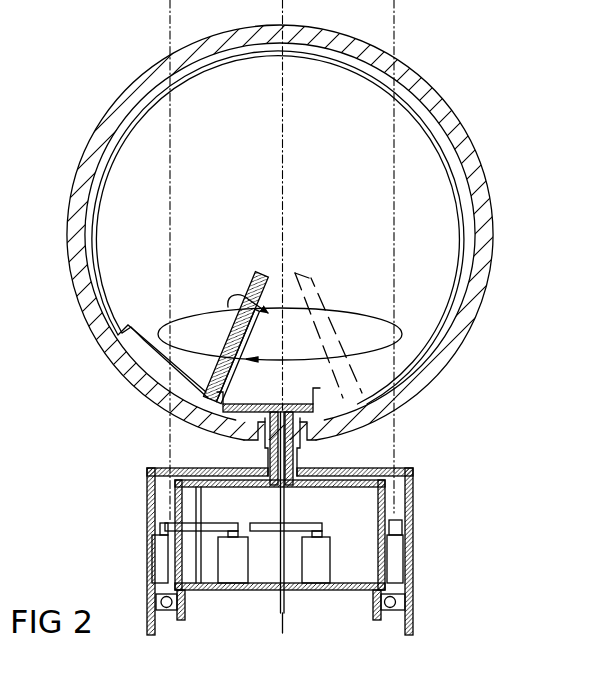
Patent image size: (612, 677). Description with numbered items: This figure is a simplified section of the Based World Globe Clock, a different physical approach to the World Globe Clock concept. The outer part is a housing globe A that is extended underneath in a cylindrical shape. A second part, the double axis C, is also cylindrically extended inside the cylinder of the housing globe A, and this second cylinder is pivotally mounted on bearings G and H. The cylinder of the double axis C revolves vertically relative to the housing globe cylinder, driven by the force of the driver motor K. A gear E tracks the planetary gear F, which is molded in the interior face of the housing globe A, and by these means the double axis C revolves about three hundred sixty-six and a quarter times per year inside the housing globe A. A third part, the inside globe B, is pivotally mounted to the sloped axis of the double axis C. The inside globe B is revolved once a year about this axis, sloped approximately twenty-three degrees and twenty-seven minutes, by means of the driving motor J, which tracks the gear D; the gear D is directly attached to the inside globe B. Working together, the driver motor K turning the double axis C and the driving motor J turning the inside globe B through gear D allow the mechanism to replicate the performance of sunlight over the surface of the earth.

The housing globe A is at (483, 143).
The inside globe B is at (467, 184).
The double axis C is at (278, 270).
The gear D is at (297, 521).
The gear E is at (221, 521).
The planetary gear F is at (165, 522).
The bearing G is at (292, 447).
The bearing H is at (396, 606).
The driving motor J is at (318, 578).
The driver motor K is at (228, 578).